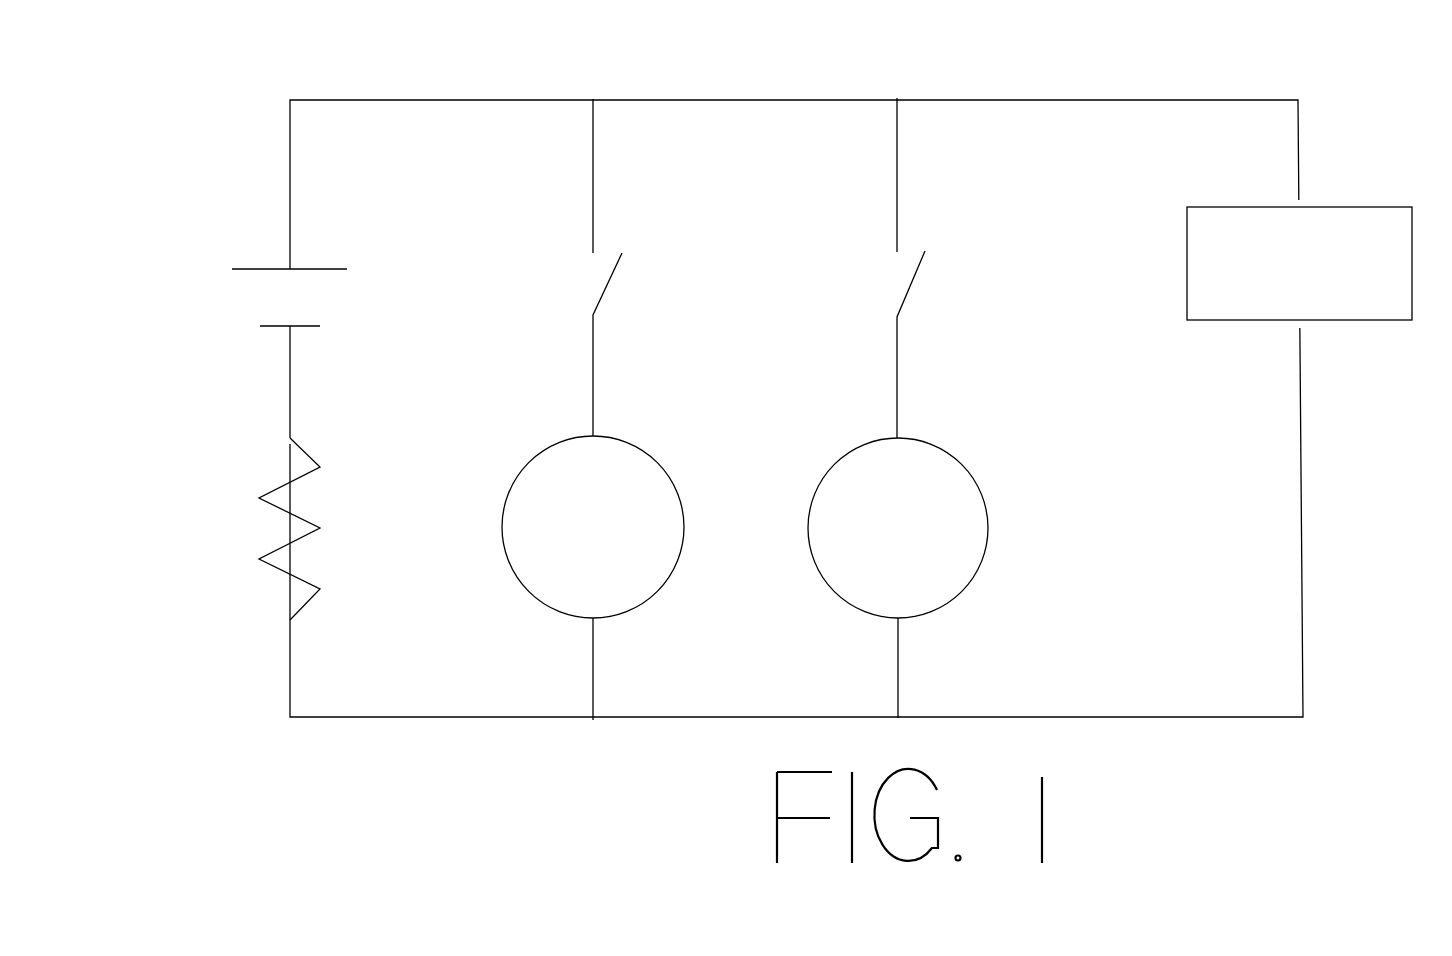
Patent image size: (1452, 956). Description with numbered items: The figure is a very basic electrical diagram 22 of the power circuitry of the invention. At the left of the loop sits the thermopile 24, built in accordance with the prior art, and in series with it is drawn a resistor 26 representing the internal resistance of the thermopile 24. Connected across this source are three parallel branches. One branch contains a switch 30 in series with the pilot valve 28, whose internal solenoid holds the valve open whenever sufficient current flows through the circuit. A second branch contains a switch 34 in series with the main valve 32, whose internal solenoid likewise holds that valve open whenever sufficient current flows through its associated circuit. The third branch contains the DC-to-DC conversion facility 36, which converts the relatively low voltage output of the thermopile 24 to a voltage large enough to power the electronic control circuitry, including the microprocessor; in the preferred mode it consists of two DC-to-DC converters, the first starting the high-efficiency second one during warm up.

The electrical diagram 22 is at (775, 70).
The thermopile 24 is at (320, 253).
The resistor 26 is at (322, 465).
The pilot valve 28 is at (531, 590).
The pilot valve switch 30 is at (622, 284).
The main valve 32 is at (957, 587).
The main valve switch 34 is at (925, 282).
The DC-to-DC conversion facility 36 is at (1192, 212).